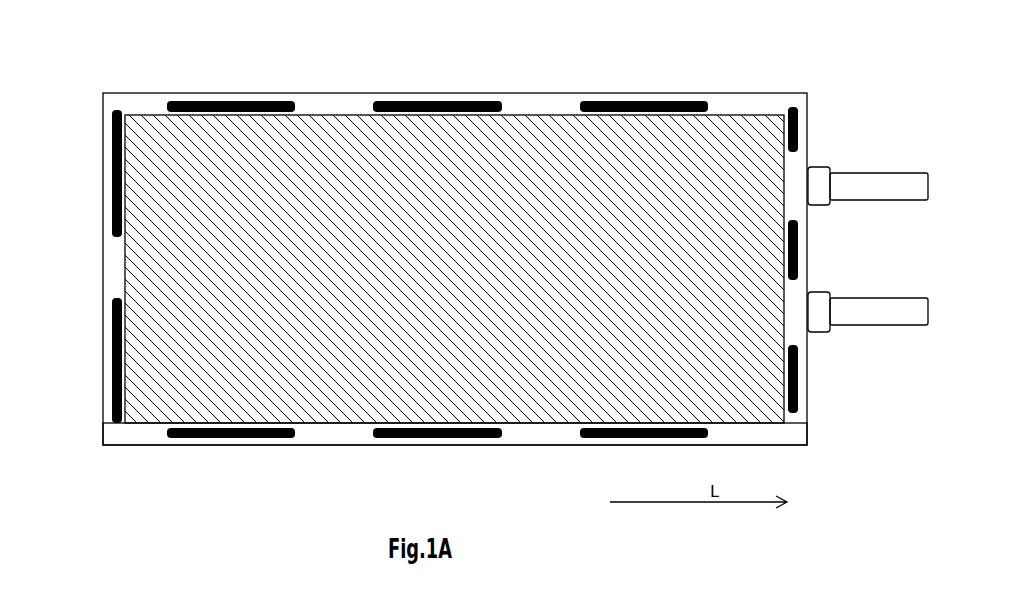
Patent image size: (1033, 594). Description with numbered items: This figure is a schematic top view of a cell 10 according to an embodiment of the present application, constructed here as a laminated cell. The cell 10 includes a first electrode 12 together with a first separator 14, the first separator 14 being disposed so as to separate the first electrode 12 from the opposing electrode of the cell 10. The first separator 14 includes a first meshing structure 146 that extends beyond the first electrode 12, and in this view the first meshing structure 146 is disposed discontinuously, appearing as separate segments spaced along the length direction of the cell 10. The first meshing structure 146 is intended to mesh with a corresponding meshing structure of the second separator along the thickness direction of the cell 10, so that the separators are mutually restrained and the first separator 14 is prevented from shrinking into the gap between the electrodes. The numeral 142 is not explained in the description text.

The cell 10 is at (413, 83).
The first electrode 12 is at (170, 398).
The first separator 14 is at (120, 270).
The bottom wall of case 142 is at (325, 435).
The first meshing structure 146 is at (427, 435).